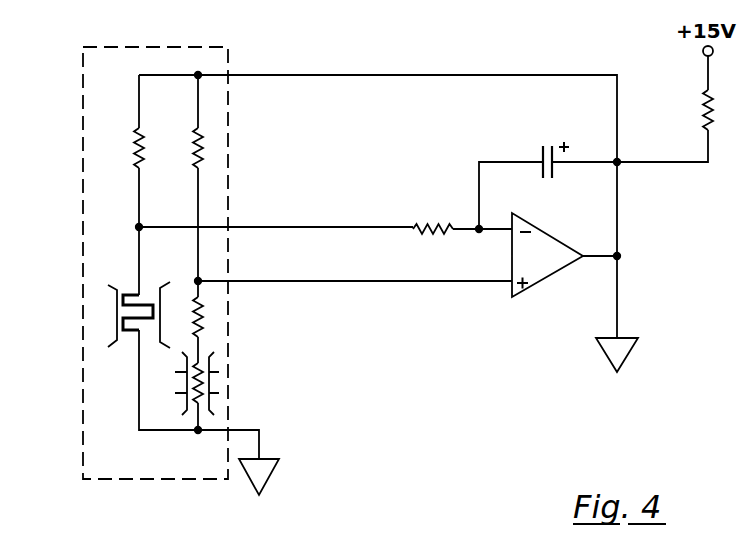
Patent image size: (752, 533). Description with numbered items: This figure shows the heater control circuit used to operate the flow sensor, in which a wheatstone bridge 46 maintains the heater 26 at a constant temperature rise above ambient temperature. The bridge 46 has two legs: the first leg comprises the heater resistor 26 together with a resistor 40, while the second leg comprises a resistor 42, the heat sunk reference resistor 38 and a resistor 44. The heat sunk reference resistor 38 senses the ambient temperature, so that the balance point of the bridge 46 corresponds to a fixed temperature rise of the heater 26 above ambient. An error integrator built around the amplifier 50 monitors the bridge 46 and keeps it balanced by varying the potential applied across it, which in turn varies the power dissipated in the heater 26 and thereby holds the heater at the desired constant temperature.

The heater 26 is at (117, 316).
The heat sunk reference resistor 38 is at (210, 389).
The resistor 40 is at (146, 141).
The resistor 42 is at (205, 146).
The resistor 44 is at (205, 316).
The wheatstone bridge 46 is at (153, 47).
The amplifier 50 is at (547, 246).